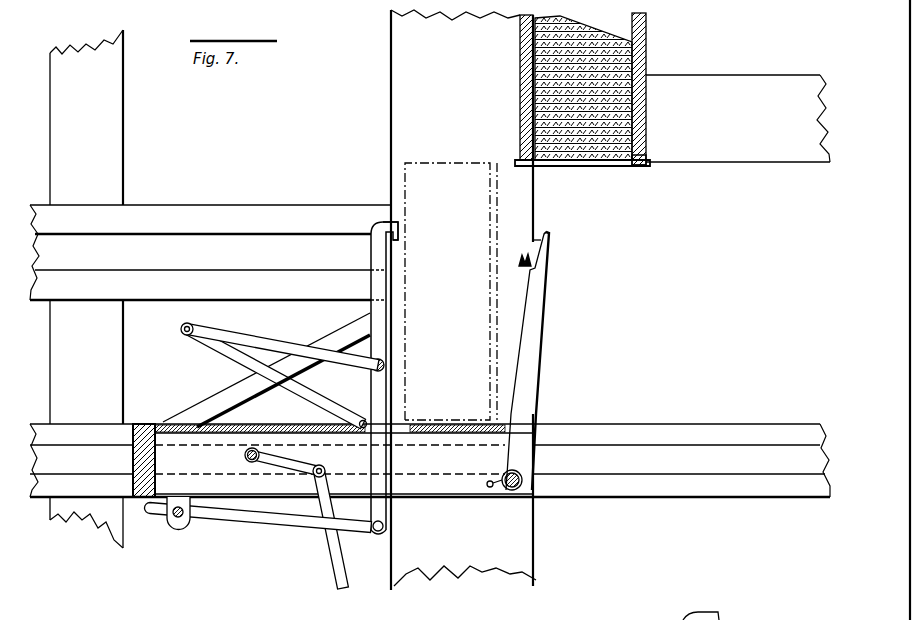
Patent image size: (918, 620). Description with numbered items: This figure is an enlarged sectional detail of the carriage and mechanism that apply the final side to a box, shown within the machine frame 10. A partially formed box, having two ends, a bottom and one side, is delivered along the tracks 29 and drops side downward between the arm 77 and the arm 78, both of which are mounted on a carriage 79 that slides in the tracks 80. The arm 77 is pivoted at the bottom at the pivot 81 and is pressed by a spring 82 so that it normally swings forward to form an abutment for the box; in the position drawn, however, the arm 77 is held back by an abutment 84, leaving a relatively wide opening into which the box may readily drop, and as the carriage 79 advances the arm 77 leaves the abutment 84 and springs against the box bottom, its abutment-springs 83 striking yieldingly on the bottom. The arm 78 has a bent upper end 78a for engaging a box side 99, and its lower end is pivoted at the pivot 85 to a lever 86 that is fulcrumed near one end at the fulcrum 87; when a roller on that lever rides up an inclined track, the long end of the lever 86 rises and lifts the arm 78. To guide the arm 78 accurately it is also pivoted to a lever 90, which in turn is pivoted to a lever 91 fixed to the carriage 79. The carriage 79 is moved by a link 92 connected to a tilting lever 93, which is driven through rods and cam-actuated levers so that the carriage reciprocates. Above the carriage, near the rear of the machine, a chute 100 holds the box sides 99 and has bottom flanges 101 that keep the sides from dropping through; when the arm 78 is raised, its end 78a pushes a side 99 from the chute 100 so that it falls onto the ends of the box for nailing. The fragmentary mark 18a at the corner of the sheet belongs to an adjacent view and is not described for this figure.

The frame 10 is at (462, 108).
The tracks 29 is at (210, 252).
The tracks 80 is at (430, 460).
The arm 78 is at (386, 333).
The bent upper end 78a is at (400, 232).
The carriage 79 is at (214, 392).
The lever 90 is at (296, 352).
The lever 91 is at (308, 392).
The arm 77 is at (536, 337).
The abutment-springs 83 is at (523, 258).
The abutment 84 is at (546, 232).
The pivot 81 is at (522, 476).
The spring 82 is at (508, 490).
The link 92 is at (300, 470).
The tilting lever 93 is at (345, 588).
The lever 86 is at (278, 522).
The fulcrum 87 is at (178, 520).
The pivot 85 is at (378, 532).
The box side 99 is at (604, 166).
The chute 100 is at (647, 52).
The flanges 101 is at (641, 168).
The fragment 18a is at (712, 611).